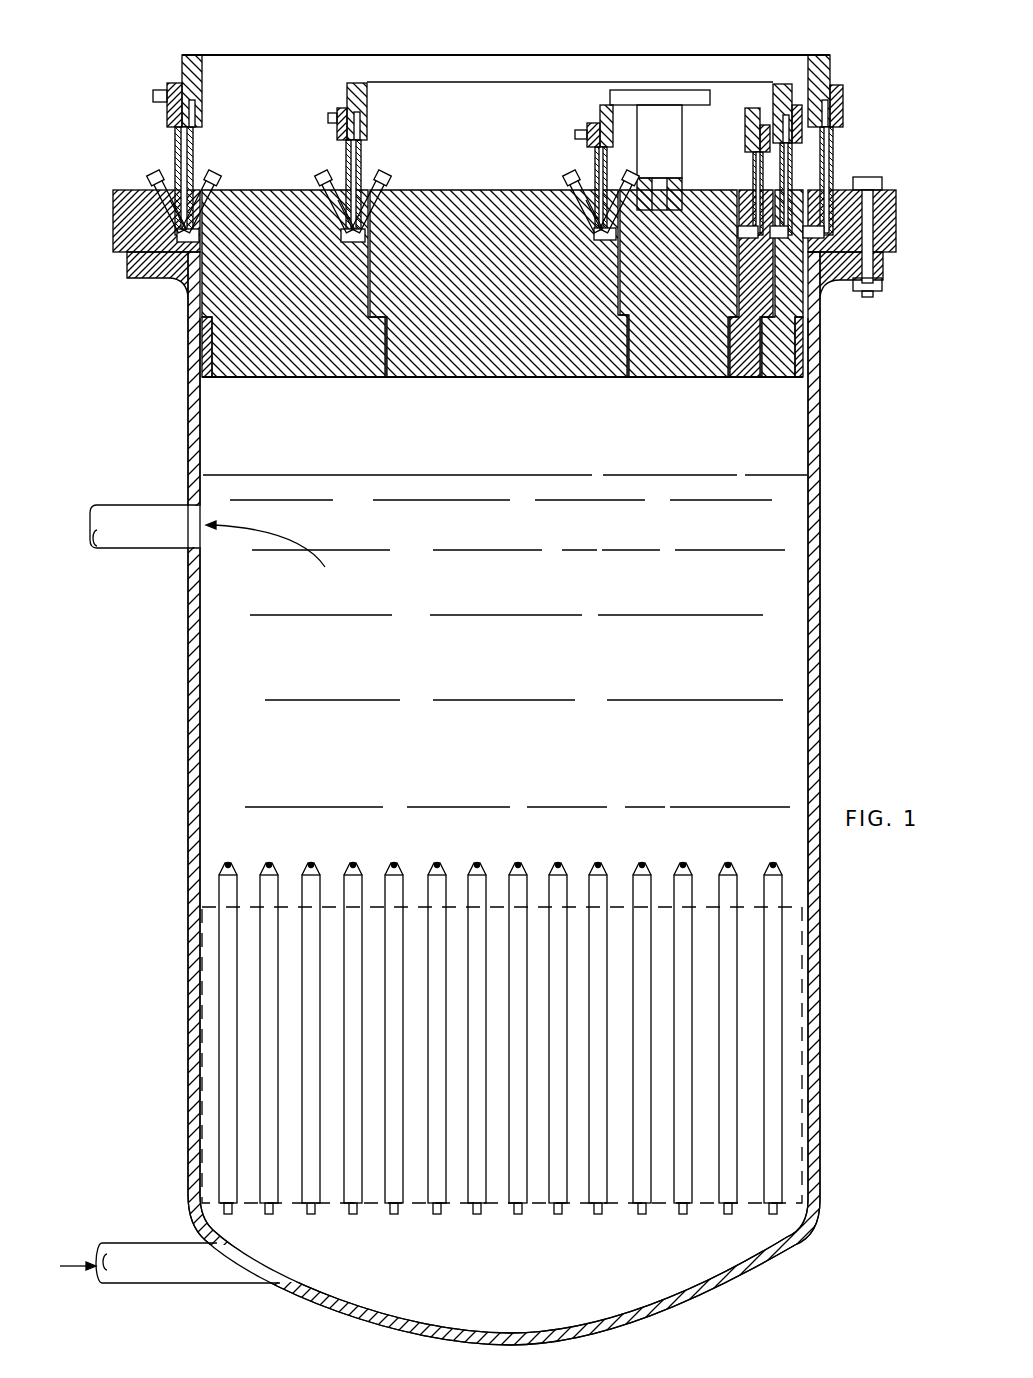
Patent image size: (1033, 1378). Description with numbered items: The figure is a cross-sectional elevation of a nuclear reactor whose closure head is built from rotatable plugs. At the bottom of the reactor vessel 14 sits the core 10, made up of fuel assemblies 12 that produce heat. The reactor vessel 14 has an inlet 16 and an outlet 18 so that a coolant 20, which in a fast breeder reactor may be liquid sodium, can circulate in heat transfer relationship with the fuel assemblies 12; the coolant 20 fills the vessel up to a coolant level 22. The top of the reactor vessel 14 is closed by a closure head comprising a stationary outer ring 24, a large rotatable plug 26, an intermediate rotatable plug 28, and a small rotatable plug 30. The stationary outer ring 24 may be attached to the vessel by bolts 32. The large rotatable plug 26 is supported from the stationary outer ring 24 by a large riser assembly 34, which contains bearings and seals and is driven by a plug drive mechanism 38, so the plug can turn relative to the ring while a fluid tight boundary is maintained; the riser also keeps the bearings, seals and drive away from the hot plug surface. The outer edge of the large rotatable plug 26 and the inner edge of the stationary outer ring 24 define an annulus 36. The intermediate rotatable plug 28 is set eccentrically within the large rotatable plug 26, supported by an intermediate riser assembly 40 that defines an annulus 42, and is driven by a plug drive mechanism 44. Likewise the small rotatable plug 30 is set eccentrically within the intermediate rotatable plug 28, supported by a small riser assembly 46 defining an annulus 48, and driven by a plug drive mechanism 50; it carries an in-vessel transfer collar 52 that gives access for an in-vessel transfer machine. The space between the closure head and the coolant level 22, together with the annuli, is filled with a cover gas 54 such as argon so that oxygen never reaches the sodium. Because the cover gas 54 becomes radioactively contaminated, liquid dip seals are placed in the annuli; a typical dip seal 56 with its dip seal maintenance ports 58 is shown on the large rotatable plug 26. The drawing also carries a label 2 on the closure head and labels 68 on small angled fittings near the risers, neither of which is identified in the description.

The closure flange 2 is at (897, 224).
The core 10 is at (477, 1230).
The fuel assemblies 12 is at (394, 882).
The reactor vessel 14 is at (822, 650).
The inlet 16 is at (179, 1268).
The outlet 18 is at (144, 545).
The coolant 20 is at (755, 582).
The coolant level 22 is at (516, 472).
The stationary outer ring 24 is at (122, 227).
The large rotatable plug 26 is at (298, 334).
The intermediate rotatable plug 28 is at (500, 326).
The small rotatable plug 30 is at (684, 328).
The bolts 32 is at (868, 177).
The large riser assembly 34 is at (177, 70).
The annulus 36 is at (208, 380).
The plug drive mechanism 38 is at (153, 95).
The intermediate riser assembly 40 is at (340, 82).
The annulus 42 is at (396, 378).
The plug drive mechanism 44 is at (328, 118).
The small riser assembly 46 is at (592, 107).
The annulus 48 is at (621, 378).
The plug drive mechanism 50 is at (576, 135).
The in-vessel transfer collar 52 is at (630, 95).
The cover gas 54 is at (509, 429).
The dip seal 56 is at (215, 250).
The dip seal maintenance ports 58 is at (206, 212).
The angled nozzle 68 is at (152, 176).